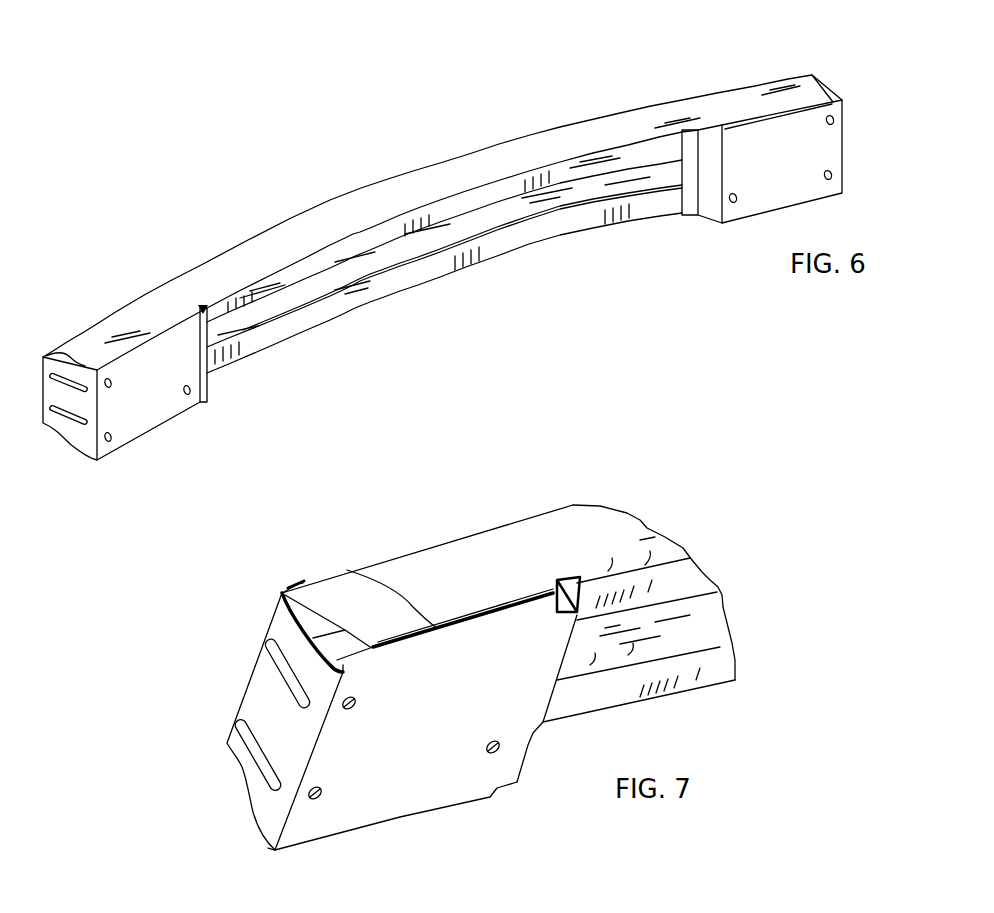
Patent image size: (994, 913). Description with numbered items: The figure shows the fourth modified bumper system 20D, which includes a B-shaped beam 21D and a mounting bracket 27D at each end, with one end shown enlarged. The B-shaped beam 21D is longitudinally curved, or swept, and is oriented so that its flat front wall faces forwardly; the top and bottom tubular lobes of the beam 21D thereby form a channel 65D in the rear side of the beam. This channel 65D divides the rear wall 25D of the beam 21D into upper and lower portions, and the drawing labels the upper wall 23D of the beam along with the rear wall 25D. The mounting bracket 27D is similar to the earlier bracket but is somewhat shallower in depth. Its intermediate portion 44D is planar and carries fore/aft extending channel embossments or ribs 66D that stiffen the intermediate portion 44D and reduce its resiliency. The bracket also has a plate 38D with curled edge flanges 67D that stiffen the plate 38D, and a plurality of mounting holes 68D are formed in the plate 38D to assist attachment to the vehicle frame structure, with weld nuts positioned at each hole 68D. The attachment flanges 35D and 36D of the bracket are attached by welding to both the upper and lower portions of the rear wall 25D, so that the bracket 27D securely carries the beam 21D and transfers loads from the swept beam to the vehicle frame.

In FIG. 6, the bumper system 20D is at (556, 96).
In FIG. 6, the B-shaped beam 21D is at (362, 180).
In FIG. 7, the B-shaped beam 21D is at (636, 498).
In FIG. 6, the top flange / upper wall 23D is at (250, 245).
In FIG. 7, the top flange / upper wall 23D is at (640, 537).
In FIG. 6, the rear wall 25D is at (377, 240).
In FIG. 7, the rear wall 25D is at (697, 580).
In FIG. 6, the mounting bracket 27D is at (51, 442).
In FIG. 7, the mounting bracket 27D is at (228, 791).
In FIG. 7, the attachment flange 35D is at (573, 577).
In FIG. 7, the attachment flange 36D is at (357, 572).
In FIG. 7, the plate 38D is at (503, 772).
In FIG. 7, the intermediate portion 44D is at (260, 692).
In FIG. 6, the channel 65D is at (477, 226).
In FIG. 7, the channel 65D is at (710, 622).
In FIG. 7, the channel embossments or ribs 66D is at (270, 647).
In FIG. 7, the curled edge flanges 67D is at (373, 557).
In FIG. 7, the mounting holes 68D is at (323, 795).